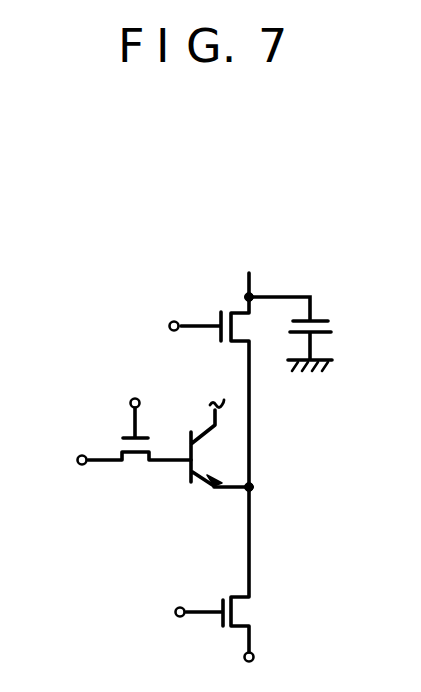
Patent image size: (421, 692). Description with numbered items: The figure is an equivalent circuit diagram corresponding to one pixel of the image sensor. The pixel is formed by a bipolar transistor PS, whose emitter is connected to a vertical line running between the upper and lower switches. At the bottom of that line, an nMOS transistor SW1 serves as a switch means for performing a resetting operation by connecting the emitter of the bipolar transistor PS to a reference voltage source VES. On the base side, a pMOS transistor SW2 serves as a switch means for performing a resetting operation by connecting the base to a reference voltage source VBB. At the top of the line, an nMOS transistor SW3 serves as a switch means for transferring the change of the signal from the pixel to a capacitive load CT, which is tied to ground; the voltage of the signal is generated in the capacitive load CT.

The nMOS transistor SW1 is at (245, 614).
The pMOS transistor SW2 is at (135, 453).
The nMOS transistor SW3 is at (200, 305).
The bipolar transistor PS is at (220, 467).
The capacitive load CT is at (306, 332).
The reference voltage source VBB is at (42, 465).
The reference voltage source VES is at (290, 659).